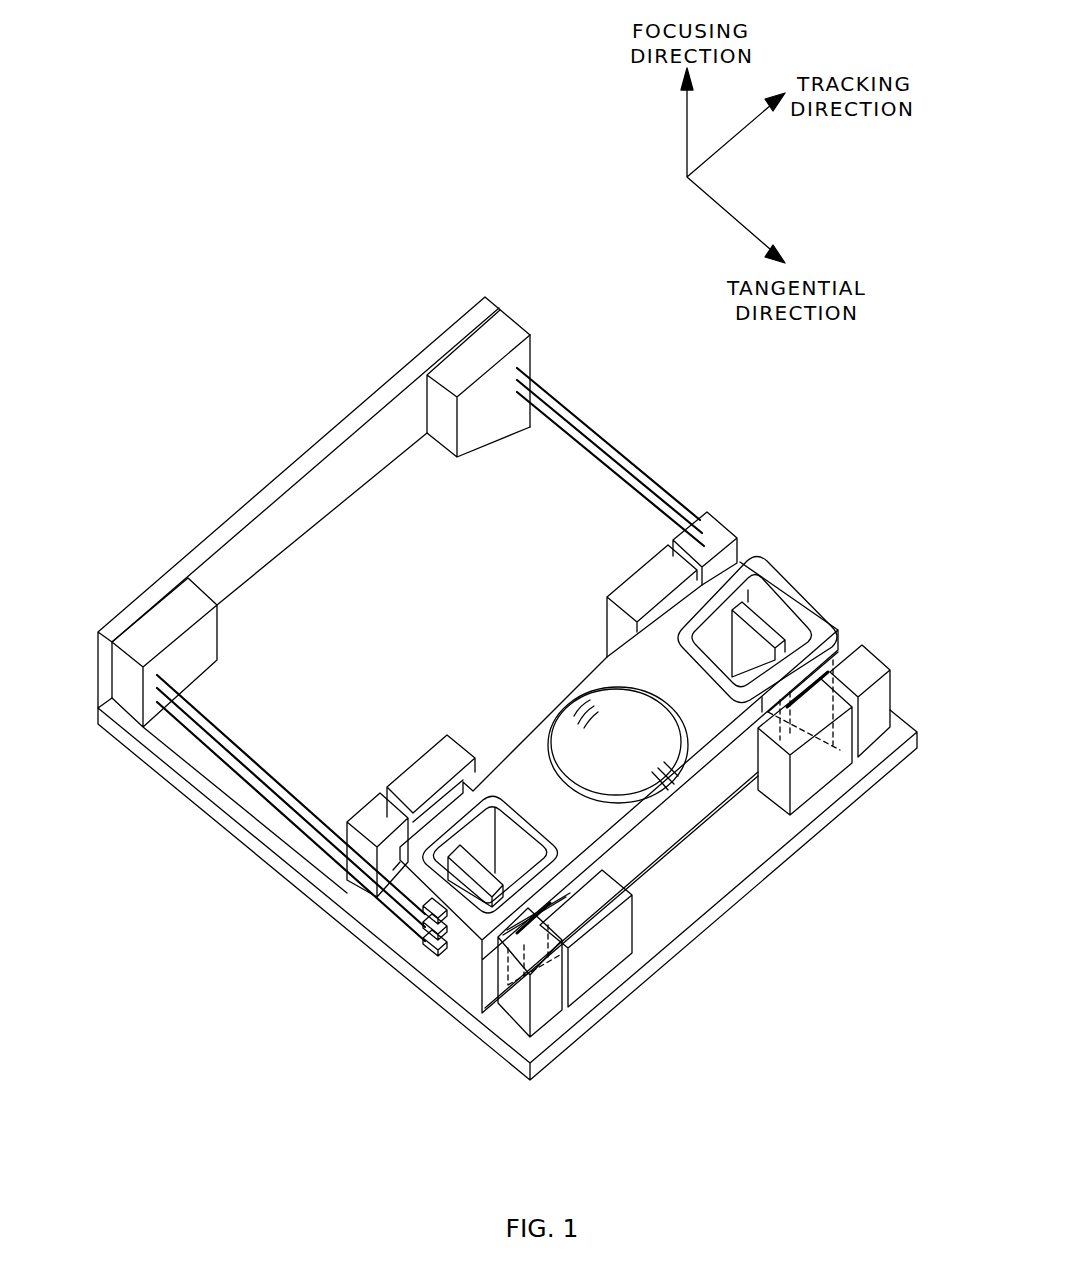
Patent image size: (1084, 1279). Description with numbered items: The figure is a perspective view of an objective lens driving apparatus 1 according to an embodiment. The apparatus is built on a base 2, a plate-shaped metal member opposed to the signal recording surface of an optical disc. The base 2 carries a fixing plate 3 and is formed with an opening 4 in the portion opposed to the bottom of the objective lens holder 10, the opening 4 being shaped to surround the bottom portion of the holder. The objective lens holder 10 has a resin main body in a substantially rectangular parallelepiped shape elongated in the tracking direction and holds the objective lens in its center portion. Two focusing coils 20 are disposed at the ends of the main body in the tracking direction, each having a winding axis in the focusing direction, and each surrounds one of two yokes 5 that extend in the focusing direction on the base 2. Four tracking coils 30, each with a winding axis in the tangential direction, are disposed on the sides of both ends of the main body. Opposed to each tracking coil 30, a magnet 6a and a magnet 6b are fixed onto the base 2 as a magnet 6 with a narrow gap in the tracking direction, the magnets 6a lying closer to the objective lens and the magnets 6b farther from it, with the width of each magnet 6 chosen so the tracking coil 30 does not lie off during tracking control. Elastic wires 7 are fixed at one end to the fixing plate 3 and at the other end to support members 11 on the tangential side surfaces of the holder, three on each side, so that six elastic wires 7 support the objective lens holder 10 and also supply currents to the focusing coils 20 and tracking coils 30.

The objective lens driving apparatus 1 is at (590, 299).
The base 2 is at (248, 833).
The fixing plate 3 is at (243, 478).
The opening 4 is at (497, 1019).
The yoke 5 is at (480, 880).
The magnet 6 is at (612, 738).
The magnet 6a is at (403, 773).
The magnet 6b is at (373, 797).
The elastic wire 7 is at (575, 437).
The objective lens holder 10 is at (546, 693).
The support member 11 is at (428, 892).
The focusing coil 20 is at (437, 867).
The tracking coil 30 is at (397, 867).